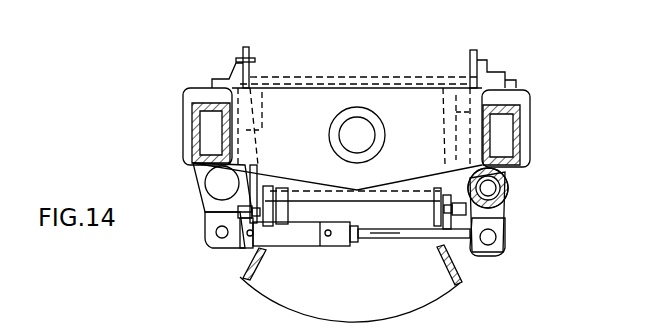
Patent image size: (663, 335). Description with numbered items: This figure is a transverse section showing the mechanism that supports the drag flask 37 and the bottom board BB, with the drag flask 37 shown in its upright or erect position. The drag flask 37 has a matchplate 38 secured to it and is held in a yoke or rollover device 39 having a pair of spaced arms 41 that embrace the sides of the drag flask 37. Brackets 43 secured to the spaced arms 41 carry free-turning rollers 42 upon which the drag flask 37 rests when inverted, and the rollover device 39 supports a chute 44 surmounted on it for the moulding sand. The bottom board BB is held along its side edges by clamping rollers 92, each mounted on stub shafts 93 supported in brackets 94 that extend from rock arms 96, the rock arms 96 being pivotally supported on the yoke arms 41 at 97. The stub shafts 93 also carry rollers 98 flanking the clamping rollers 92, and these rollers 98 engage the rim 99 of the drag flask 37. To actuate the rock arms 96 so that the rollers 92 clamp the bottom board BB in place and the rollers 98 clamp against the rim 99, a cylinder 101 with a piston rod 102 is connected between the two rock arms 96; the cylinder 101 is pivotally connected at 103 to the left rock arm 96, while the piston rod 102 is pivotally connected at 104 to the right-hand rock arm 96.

The drag flask 37 is at (490, 72).
The matchplate 38 is at (400, 77).
The yoke or rollover device 39 is at (532, 92).
The spaced arms 41 is at (190, 145).
The rollers 42 is at (248, 47).
The brackets 43 is at (226, 78).
The chute 44 is at (462, 285).
The clamping rollers 92 is at (278, 245).
The stub shafts 93 is at (232, 216).
The brackets 94 is at (238, 212).
The rock arms 96 is at (215, 222).
The pivot 97 is at (505, 182).
The rollers 98 is at (256, 250).
The rim 99 is at (283, 186).
The cylinder 101 is at (338, 248).
The piston rod 102 is at (390, 240).
The pivotal connection 103 is at (226, 238).
The pivotal connection 104 is at (498, 246).
The bottom board BB is at (378, 186).